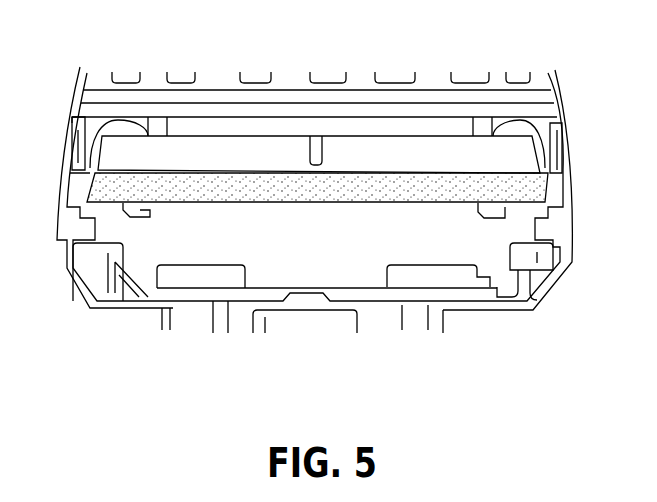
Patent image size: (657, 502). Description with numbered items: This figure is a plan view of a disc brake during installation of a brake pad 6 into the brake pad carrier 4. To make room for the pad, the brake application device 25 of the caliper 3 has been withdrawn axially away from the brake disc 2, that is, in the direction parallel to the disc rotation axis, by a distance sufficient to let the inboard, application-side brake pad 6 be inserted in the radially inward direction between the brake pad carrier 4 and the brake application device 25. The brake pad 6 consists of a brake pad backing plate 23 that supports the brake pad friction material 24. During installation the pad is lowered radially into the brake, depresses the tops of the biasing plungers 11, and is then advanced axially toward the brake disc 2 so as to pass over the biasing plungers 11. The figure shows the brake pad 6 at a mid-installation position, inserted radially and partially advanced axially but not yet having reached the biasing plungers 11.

The brake disc 2 is at (166, 82).
The caliper 3 is at (173, 310).
The brake pad carrier 4 is at (72, 138).
The brake pad 6 is at (560, 245).
The biasing plungers 11 is at (520, 130).
The brake pad backing plate 23 is at (545, 190).
The brake pad friction material 24 is at (533, 153).
The brake application device 25 is at (403, 280).